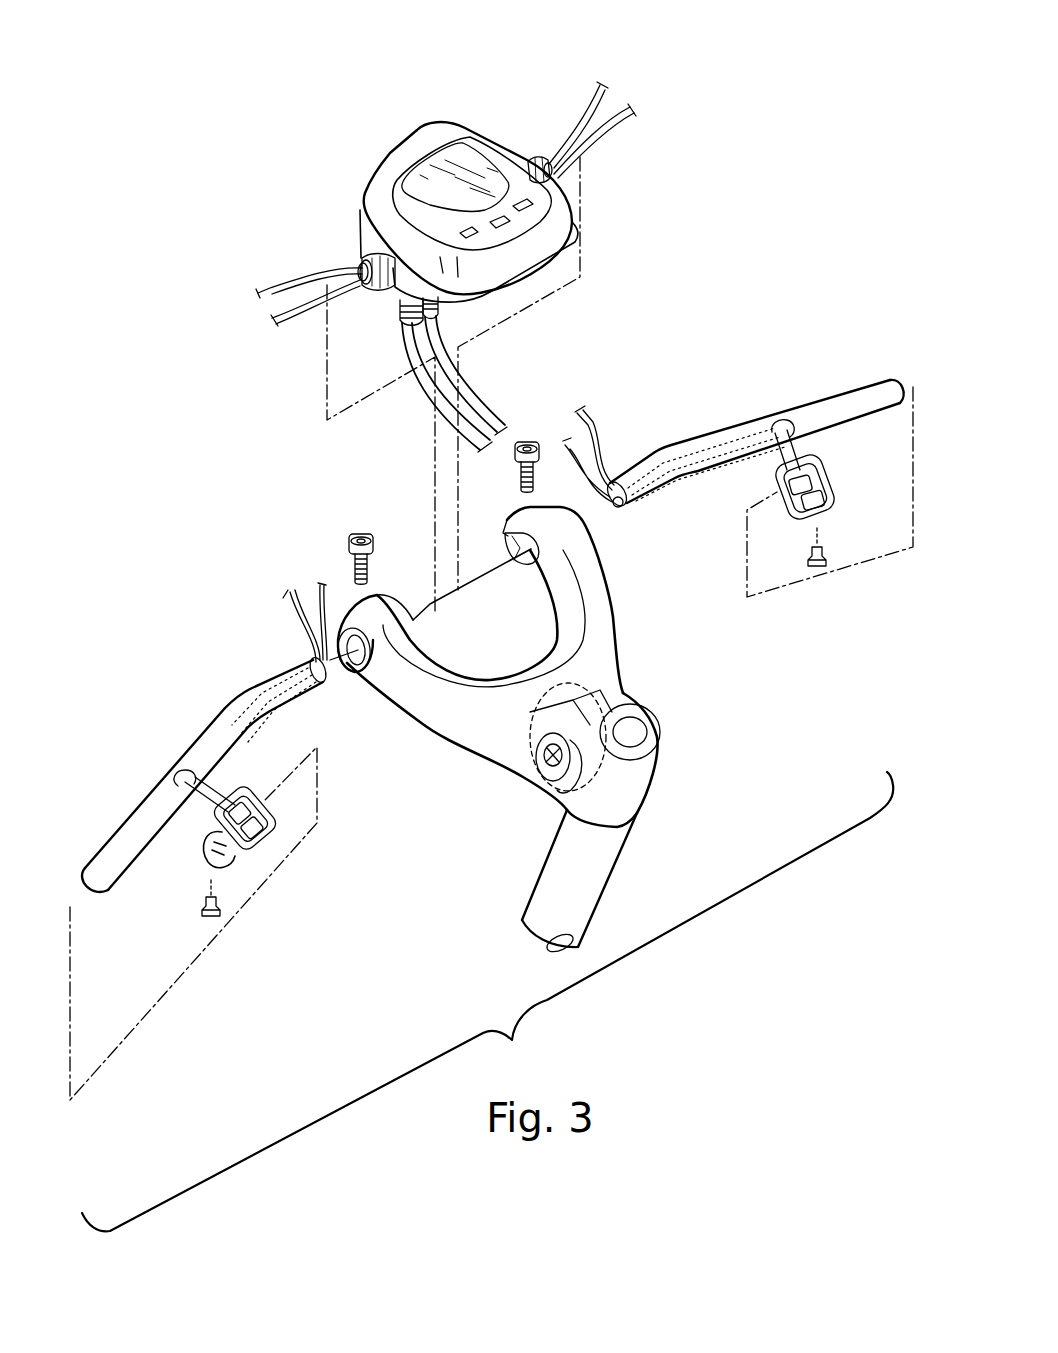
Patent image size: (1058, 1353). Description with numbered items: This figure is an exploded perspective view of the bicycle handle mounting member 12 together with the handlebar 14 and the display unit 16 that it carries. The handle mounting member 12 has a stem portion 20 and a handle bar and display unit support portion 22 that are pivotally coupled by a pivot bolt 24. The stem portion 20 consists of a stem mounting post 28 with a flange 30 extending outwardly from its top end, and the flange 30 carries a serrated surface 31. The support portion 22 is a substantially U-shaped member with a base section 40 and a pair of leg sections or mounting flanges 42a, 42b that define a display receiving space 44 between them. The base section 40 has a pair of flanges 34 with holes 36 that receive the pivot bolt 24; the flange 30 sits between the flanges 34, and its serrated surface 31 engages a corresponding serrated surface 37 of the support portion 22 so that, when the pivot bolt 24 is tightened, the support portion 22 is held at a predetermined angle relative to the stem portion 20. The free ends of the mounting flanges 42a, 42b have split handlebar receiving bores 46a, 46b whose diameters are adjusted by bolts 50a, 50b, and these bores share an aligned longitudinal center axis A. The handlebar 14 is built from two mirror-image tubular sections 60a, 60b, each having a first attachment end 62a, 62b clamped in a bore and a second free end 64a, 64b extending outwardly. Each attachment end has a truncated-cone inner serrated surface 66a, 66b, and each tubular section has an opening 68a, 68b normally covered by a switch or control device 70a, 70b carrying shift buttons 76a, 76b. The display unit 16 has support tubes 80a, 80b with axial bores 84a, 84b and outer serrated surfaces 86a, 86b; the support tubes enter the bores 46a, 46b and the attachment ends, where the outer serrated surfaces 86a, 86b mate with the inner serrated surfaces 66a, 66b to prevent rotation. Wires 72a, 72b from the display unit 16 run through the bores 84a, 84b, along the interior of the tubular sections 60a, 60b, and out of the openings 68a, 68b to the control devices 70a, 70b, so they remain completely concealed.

The handle mounting member 12 is at (714, 641).
The handlebar 14 is at (684, 378).
The display unit 16 is at (640, 143).
The stem portion 20 is at (644, 816).
The handle bar and display unit support portion 22 is at (617, 606).
The pivot bolt 24 is at (547, 757).
The stem mounting post 28 is at (603, 893).
The flange 30 is at (600, 703).
The serrated surface 31 is at (537, 760).
The flanges 34 is at (630, 702).
The holes 36 is at (567, 773).
The serrated surface 37 is at (527, 737).
The base section 40 is at (513, 697).
The first mounting flange 42a is at (407, 702).
The second mounting flange 42b is at (606, 563).
The display receiving space 44 is at (460, 606).
The handlebar receiving bore 46a is at (356, 672).
The handlebar receiving bore 46b is at (527, 560).
The bolt 50a is at (360, 528).
The bolt 50b is at (527, 437).
The tubular section 60a is at (203, 727).
The tubular section 60b is at (733, 420).
The first attachment end 62a is at (287, 663).
The first attachment end 62b is at (622, 477).
The second free end 64a is at (103, 843).
The second free end 64b is at (863, 380).
The inner serrated surface 66a is at (313, 690).
The inner serrated surface 66b is at (627, 507).
The opening 68a is at (180, 777).
The opening 68b is at (787, 420).
The switch or control device 70a is at (260, 870).
The switch or control device 70b is at (832, 462).
The wires 72a is at (303, 278).
The wires 72b is at (622, 107).
The shift button 76a is at (268, 822).
The shift button 76b is at (823, 500).
The support tube 80a is at (355, 262).
The support tube 80b is at (535, 155).
The bore 84a is at (363, 283).
The bore 84b is at (552, 180).
The outer serrated surface 86a is at (378, 282).
The outer serrated surface 86b is at (554, 184).
The longitudinal center axis A is at (332, 660).